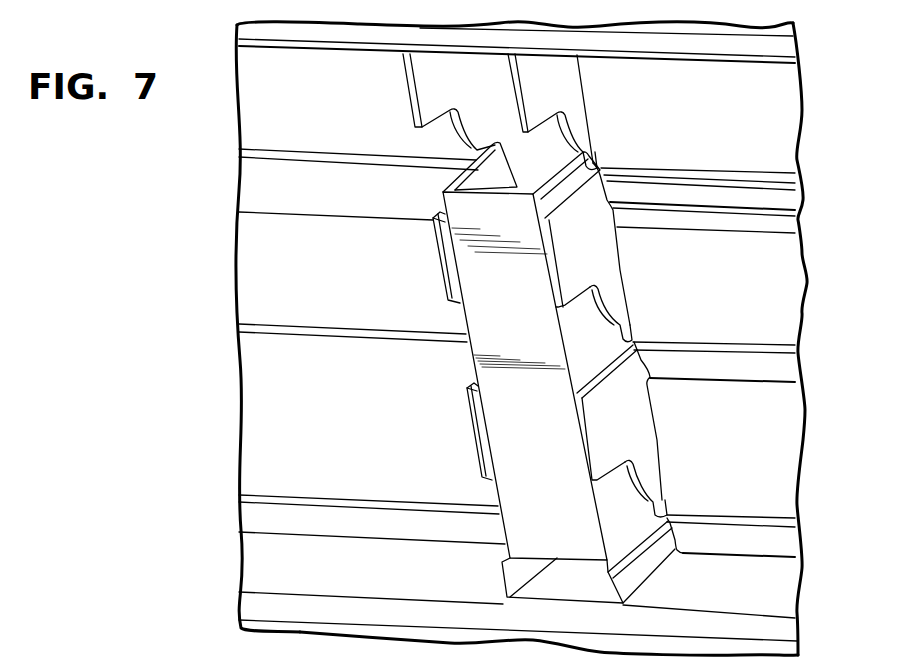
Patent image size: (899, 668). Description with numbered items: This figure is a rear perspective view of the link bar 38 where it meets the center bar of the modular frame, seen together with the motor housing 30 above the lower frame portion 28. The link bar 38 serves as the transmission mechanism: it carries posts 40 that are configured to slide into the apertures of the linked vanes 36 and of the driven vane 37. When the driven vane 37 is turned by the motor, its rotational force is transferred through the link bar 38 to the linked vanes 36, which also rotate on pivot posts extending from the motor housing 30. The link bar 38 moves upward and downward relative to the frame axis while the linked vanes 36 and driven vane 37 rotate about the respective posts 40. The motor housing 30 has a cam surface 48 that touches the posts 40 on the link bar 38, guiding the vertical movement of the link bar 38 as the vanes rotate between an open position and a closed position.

The lower frame portion 28 is at (767, 630).
The motor housing 30 is at (553, 68).
The linked vanes 36 is at (773, 300).
The driven vane 37 is at (773, 113).
The link bar 38 is at (490, 342).
The posts 40 is at (590, 156).
The cam surface 48 is at (605, 307).